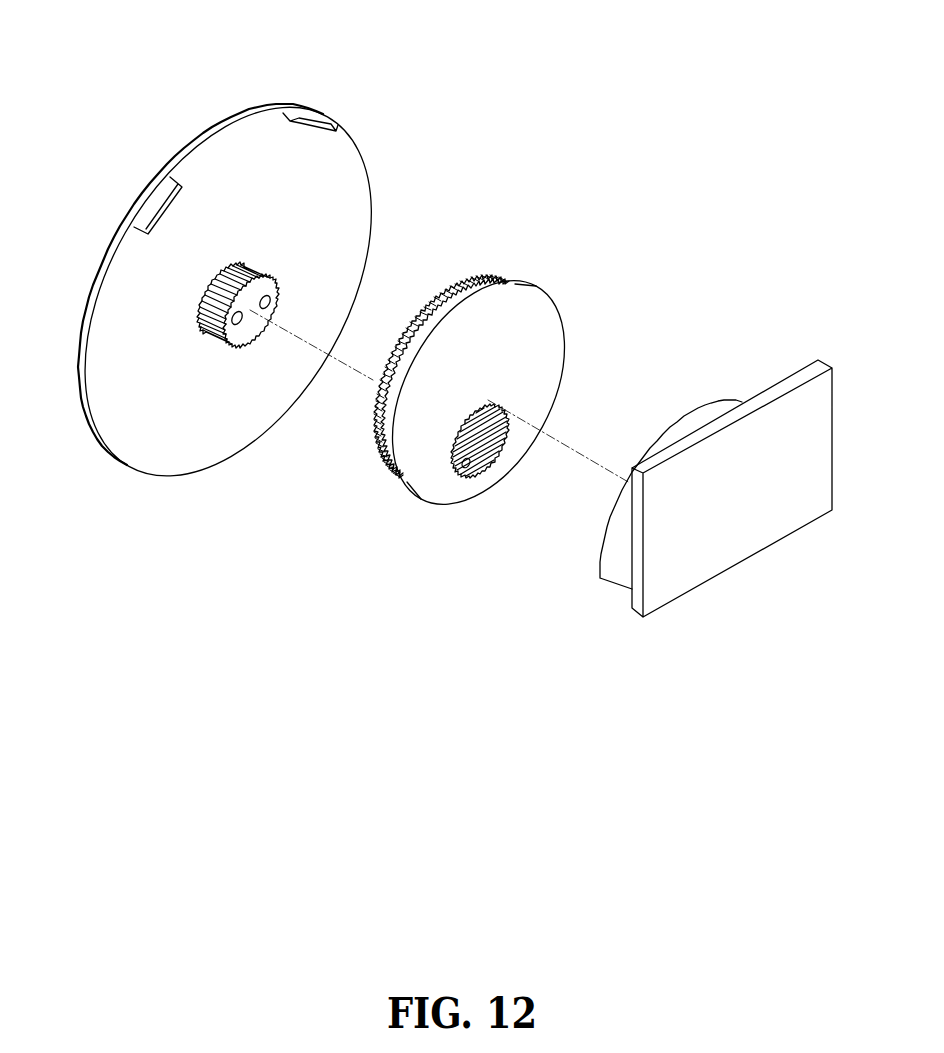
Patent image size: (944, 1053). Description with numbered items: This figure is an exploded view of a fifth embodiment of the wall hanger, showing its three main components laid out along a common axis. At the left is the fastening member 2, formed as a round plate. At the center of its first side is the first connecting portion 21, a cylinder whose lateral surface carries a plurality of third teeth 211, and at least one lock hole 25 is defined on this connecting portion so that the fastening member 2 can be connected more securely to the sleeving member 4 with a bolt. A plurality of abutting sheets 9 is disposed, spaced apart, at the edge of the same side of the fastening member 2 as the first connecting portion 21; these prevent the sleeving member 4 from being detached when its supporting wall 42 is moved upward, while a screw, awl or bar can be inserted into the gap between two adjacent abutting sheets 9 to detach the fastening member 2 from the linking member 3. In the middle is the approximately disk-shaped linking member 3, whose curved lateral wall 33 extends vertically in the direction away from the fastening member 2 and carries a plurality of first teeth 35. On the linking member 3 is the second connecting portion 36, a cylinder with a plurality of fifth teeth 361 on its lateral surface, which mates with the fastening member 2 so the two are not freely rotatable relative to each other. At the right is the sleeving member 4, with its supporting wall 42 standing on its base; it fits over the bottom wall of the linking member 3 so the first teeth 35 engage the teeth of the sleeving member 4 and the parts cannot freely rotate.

The fastening member 2 is at (352, 132).
The abutting sheets 9 is at (158, 240).
The first connecting portion 21 is at (217, 263).
The third teeth 211 is at (250, 273).
The lock hole 25 is at (272, 300).
The linking member 3 is at (545, 288).
The lateral wall 33 is at (367, 407).
The first teeth 35 is at (370, 438).
The second connecting portion 36 is at (470, 483).
The fifth teeth 361 is at (467, 458).
The sleeving member 4 is at (688, 600).
The supporting wall 42 is at (705, 420).